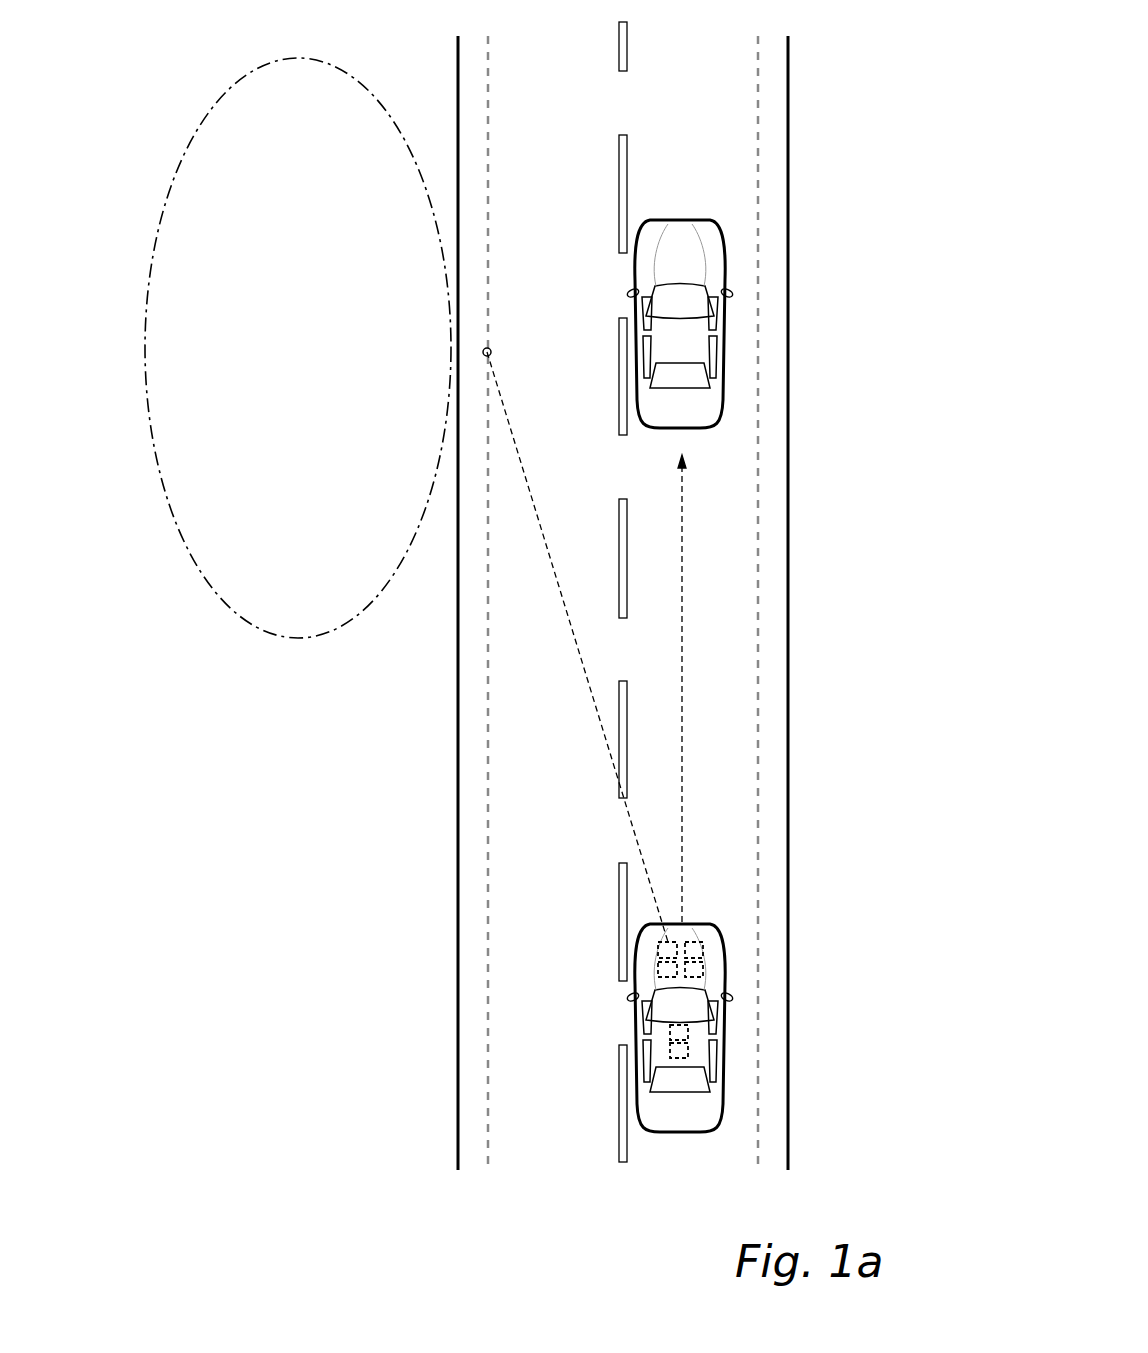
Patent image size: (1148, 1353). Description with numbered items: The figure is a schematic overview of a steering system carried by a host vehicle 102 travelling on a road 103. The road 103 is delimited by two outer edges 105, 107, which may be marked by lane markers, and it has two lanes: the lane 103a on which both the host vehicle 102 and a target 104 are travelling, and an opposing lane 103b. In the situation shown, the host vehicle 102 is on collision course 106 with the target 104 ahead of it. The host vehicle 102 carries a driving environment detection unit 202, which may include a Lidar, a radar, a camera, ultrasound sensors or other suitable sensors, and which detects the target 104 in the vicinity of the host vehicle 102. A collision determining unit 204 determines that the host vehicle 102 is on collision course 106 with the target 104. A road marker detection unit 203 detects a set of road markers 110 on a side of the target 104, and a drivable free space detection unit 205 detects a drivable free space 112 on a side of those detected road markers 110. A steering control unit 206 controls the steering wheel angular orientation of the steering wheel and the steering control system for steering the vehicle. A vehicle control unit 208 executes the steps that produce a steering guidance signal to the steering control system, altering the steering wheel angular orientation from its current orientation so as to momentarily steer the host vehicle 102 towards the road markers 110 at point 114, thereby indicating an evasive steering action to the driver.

The host vehicle 102 is at (733, 963).
The road 103 is at (730, 787).
The lane 103a is at (725, 698).
The opposing lane 103b is at (495, 680).
The target 104 is at (735, 312).
The outer edge 105 is at (487, 133).
The collision course 106 is at (682, 620).
The outer edge 107 is at (768, 160).
The road markers 110 is at (487, 100).
The drivable free space 112 is at (178, 243).
The point 114 is at (483, 352).
The driving environment detection unit 202 is at (668, 946).
The road marker detection unit 203 is at (668, 968).
The collision determining unit 204 is at (694, 946).
The drivable free space detection unit 205 is at (695, 968).
The steering control unit 206 is at (680, 1055).
The vehicle control unit 208 is at (688, 1032).